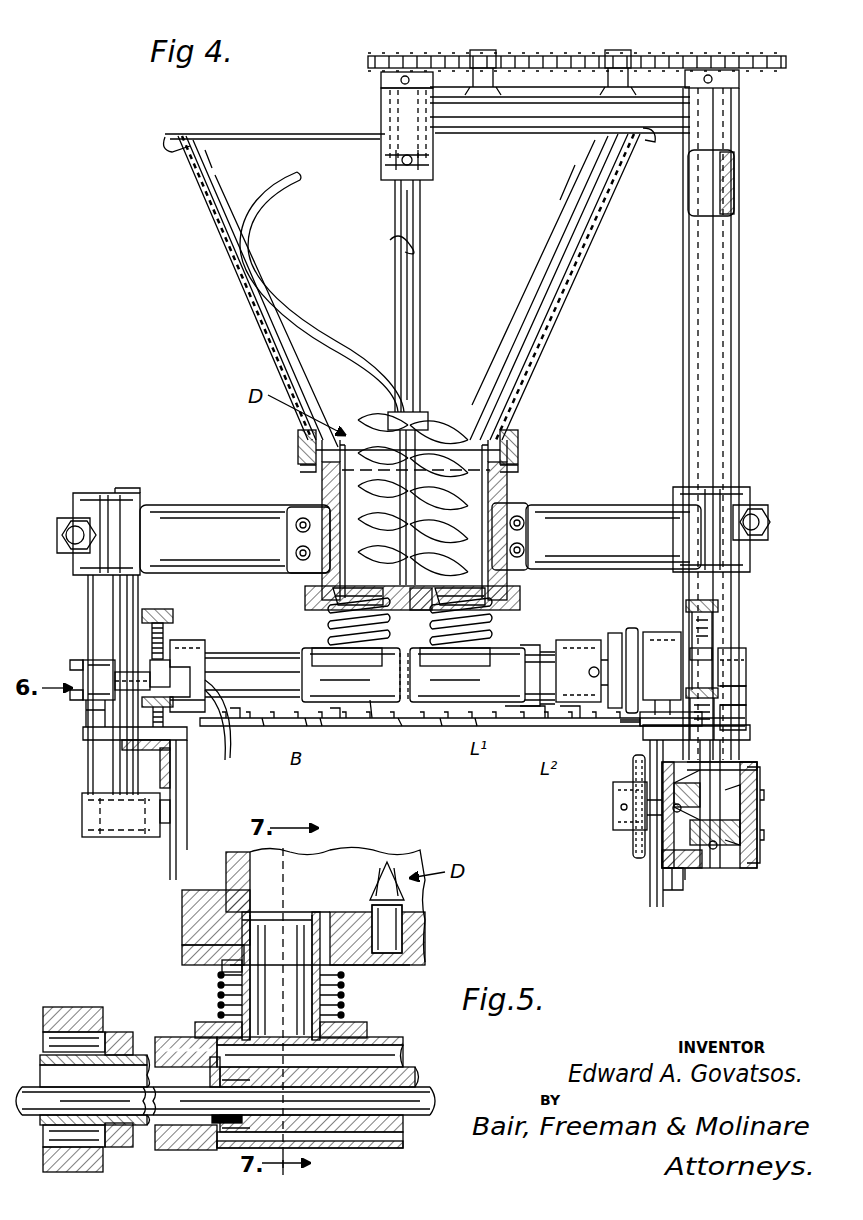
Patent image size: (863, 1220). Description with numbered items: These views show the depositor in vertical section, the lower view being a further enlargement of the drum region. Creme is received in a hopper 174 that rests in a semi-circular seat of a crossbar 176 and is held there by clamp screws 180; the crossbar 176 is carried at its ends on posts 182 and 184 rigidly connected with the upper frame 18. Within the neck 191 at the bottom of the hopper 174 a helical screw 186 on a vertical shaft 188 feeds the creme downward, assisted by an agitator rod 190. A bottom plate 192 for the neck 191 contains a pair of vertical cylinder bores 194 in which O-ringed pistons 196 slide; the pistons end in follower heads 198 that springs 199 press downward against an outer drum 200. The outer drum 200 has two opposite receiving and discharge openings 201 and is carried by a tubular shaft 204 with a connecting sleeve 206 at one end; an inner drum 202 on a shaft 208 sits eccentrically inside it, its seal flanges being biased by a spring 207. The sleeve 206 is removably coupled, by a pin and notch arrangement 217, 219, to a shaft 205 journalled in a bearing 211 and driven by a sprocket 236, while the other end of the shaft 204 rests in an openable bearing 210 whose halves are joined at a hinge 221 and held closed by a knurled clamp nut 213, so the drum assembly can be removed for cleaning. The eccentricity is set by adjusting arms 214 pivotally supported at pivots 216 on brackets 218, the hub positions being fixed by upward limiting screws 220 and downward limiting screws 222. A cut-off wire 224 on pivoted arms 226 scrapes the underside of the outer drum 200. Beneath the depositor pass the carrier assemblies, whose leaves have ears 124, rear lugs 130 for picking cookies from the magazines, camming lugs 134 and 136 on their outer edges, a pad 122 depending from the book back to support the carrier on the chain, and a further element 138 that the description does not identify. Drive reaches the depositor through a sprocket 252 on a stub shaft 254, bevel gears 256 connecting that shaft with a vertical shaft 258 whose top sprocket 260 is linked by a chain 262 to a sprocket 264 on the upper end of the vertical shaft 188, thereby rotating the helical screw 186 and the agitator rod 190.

In FIG. 4, the sprocket 264 is at (418, 58).
In FIG. 4, the chain 262 is at (570, 56).
In FIG. 4, the sprocket 260 is at (725, 56).
In FIG. 4, the vertical shaft 258 is at (715, 185).
In FIG. 4, the hopper 174 is at (578, 247).
In FIG. 4, the agitator rod 190 is at (282, 305).
In FIG. 4, the vertical shaft 188 is at (420, 295).
In FIG. 4, the helical screw 186 is at (430, 448).
In FIG. 4, the neck 191 is at (520, 476).
In FIG. 5, the neck 191 is at (355, 856).
In FIG. 4, the crossbar 176 is at (163, 505).
In FIG. 4, the clamp screws 180 is at (296, 552).
In FIG. 4, the vertical cylinder bores 194 is at (405, 592).
In FIG. 4, the O-ringed pistons 196 is at (382, 616).
In FIG. 5, the O-ringed pistons 196 is at (352, 972).
In FIG. 4, the bottom plate 192 is at (522, 616).
In FIG. 5, the bottom plate 192 is at (420, 942).
In FIG. 4, the springs 199 is at (495, 650).
In FIG. 5, the springs 199 is at (218, 990).
In FIG. 4, the tubular shaft 204 is at (222, 660).
In FIG. 5, the tubular shaft 204 is at (142, 1050).
In FIG. 4, the outer drum 200 is at (300, 678).
In FIG. 5, the outer drum 200 is at (403, 1040).
In FIG. 4, the follower heads 198 is at (413, 674).
In FIG. 5, the follower heads 198 is at (350, 1030).
In FIG. 4, the connecting sleeve 206 is at (572, 642).
In FIG. 4, the pin and notch coupling arrangement 219 is at (614, 650).
In FIG. 4, the bearing 211 is at (662, 634).
In FIG. 4, the downward limiting screws 222 is at (172, 614).
In FIG. 4, the post 184 is at (730, 625).
In FIG. 4, the shaft 205 is at (705, 650).
In FIG. 4, the adjusting arms 214 is at (150, 668).
In FIG. 4, the knurled clamp nut 213 is at (205, 645).
In FIG. 4, the openable bearing 210 is at (183, 650).
In FIG. 5, the openable bearing 210 is at (66, 1007).
In FIG. 4, the pivot 216 is at (100, 660).
In FIG. 4, the brackets 218 is at (90, 708).
In FIG. 4, the upward limiting screws 220 is at (148, 706).
In FIG. 4, the post 182 is at (105, 763).
In FIG. 4, the upper frame 18 is at (178, 752).
In FIG. 4, the hinge 221 is at (248, 745).
In FIG. 4, the arms 226 is at (290, 716).
In FIG. 4, the cut-off wire 224 is at (372, 726).
In FIG. 4, the rear lugs 130 is at (335, 728).
In FIG. 4, the camming lug 136 is at (398, 728).
In FIG. 4, the camming lug 134 is at (443, 728).
In FIG. 4, the tooth 138 is at (470, 728).
In FIG. 4, the pad 122 is at (305, 728).
In FIG. 4, the ears 124 is at (264, 728).
In FIG. 4, the pin and notch coupling arrangement 217 is at (606, 722).
In FIG. 4, the sprocket 236 is at (640, 726).
In FIG. 4, the stub shaft 254 is at (613, 803).
In FIG. 4, the sprocket 252 is at (633, 850).
In FIG. 4, the bevel gears 256 is at (695, 855).
In FIG. 5, the receiving and discharge openings 201 is at (290, 1040).
In FIG. 5, the inner drum 202 is at (418, 1075).
In FIG. 5, the shaft 208 is at (432, 1101).
In FIG. 5, the spring 207 is at (215, 1135).